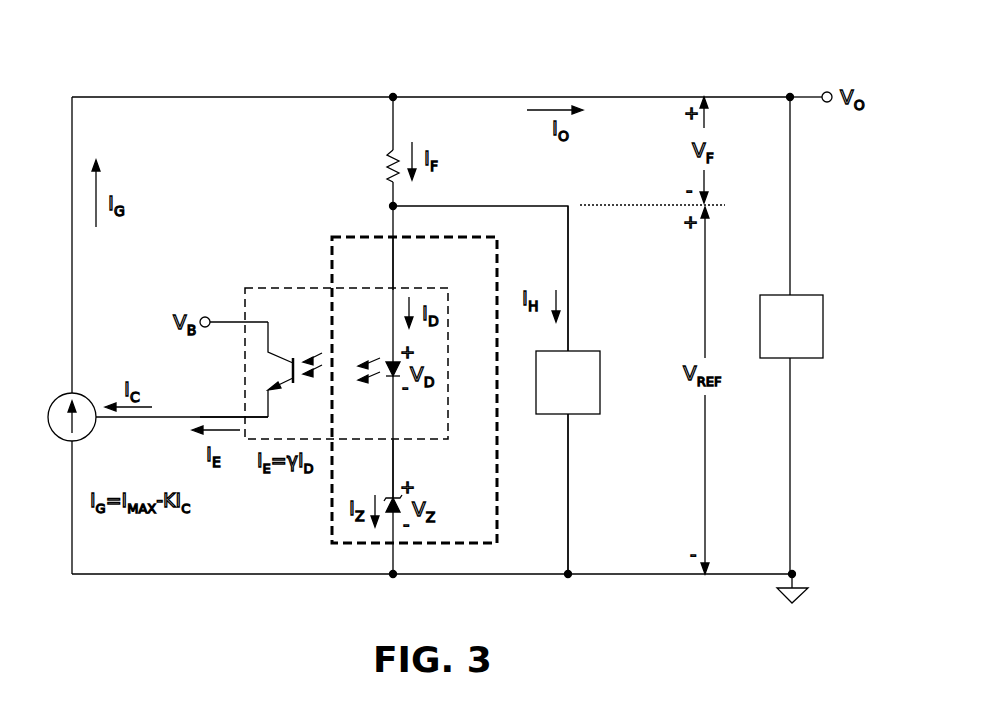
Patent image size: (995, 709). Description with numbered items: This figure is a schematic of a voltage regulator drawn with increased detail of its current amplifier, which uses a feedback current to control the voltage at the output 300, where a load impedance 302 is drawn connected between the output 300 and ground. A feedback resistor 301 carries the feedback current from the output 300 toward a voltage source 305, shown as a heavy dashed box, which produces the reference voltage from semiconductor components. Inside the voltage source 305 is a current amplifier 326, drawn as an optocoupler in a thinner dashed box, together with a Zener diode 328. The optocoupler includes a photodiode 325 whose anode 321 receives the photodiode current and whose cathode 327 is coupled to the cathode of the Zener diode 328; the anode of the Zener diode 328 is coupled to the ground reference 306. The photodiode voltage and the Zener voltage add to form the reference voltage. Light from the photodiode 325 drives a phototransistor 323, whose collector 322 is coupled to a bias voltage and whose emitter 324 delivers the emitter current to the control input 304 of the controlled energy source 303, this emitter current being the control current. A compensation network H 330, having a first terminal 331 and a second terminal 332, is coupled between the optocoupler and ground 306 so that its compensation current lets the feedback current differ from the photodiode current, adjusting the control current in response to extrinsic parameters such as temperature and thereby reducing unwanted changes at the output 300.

The output 300 is at (815, 90).
The feedback resistor R_F 301 is at (388, 153).
The load impedance ZL 302 is at (815, 288).
The controlled energy source 303 is at (62, 392).
The control input 304 is at (105, 425).
The voltage source 305 is at (338, 235).
The ground reference 306 is at (800, 567).
The anode 321 is at (400, 262).
The collector 322 is at (213, 316).
The phototransistor 323 is at (283, 340).
The emitter 324 is at (228, 410).
The photodiode 325 is at (386, 388).
The current amplifier 326 is at (287, 287).
The cathode 327 is at (403, 462).
The Zener diode 328 is at (388, 487).
The compensation network H 330 is at (603, 380).
The first terminal 331 is at (578, 278).
The second terminal 332 is at (576, 480).